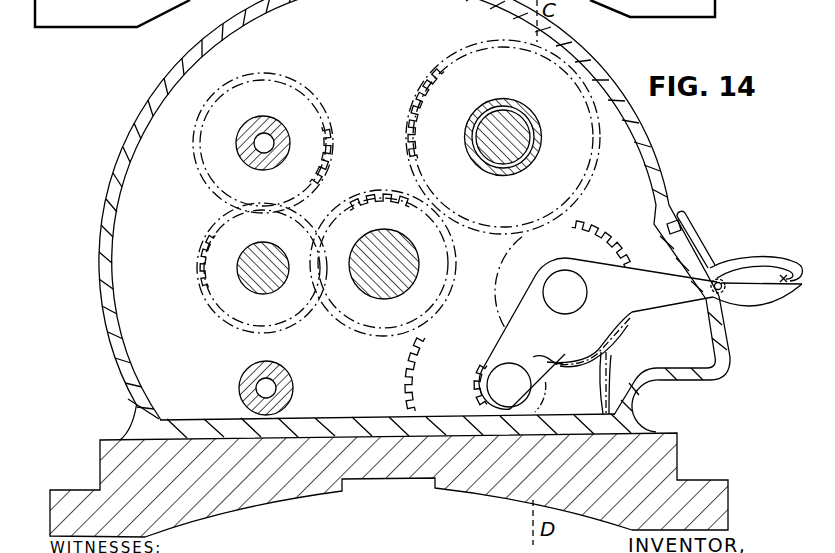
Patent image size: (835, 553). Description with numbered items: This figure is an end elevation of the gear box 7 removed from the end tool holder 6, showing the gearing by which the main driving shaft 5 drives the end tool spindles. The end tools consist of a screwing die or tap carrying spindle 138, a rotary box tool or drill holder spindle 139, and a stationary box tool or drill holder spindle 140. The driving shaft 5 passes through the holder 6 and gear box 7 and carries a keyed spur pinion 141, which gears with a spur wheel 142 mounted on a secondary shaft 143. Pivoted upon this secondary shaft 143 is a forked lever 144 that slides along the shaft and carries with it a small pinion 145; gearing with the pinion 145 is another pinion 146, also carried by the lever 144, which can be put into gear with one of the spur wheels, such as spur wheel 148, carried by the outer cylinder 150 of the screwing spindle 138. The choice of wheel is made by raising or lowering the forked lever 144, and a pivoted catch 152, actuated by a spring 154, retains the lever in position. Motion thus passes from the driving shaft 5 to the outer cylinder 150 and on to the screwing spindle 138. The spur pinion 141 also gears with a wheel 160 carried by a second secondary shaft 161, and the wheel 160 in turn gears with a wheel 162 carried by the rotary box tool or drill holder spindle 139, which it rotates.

The driving shaft 5 is at (383, 290).
The end tool holder 6 is at (240, 500).
The gear box 7 is at (173, 70).
The screwing die or tap carrying spindle 138 is at (503, 118).
The rotary box tool or drill holder spindle 139 is at (290, 147).
The stationary box tool or drill holder spindle 140 is at (232, 393).
The spur pinion 141 is at (362, 213).
The spur wheel 142 is at (413, 384).
The secondary shaft 143 is at (508, 386).
The forked lever 144 is at (610, 362).
The small pinion 145 is at (480, 367).
The pinion 146 is at (605, 244).
The spur wheel 148 is at (568, 200).
The outer cylinder 150 is at (543, 138).
The pivoted catch 152 is at (745, 259).
The spring 154 is at (800, 268).
The wheel 160 is at (222, 312).
The secondary shaft 161 is at (269, 291).
The wheel 162 is at (219, 197).